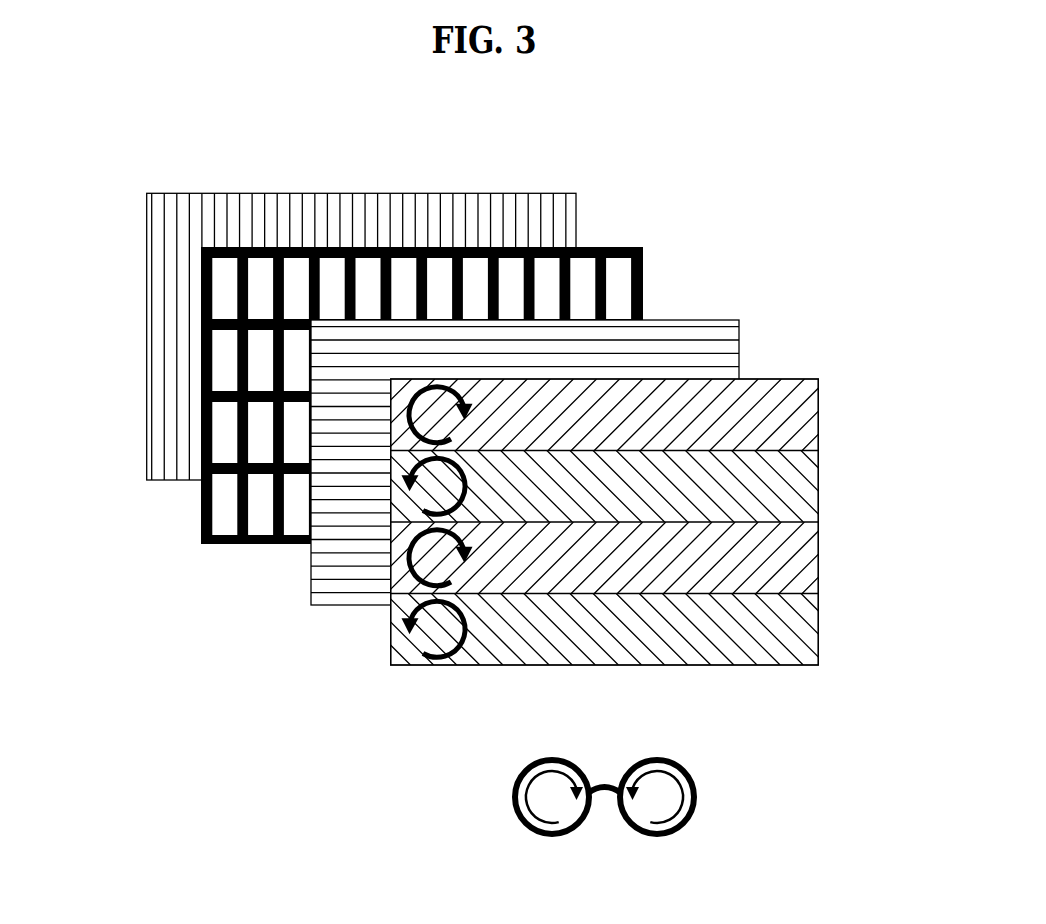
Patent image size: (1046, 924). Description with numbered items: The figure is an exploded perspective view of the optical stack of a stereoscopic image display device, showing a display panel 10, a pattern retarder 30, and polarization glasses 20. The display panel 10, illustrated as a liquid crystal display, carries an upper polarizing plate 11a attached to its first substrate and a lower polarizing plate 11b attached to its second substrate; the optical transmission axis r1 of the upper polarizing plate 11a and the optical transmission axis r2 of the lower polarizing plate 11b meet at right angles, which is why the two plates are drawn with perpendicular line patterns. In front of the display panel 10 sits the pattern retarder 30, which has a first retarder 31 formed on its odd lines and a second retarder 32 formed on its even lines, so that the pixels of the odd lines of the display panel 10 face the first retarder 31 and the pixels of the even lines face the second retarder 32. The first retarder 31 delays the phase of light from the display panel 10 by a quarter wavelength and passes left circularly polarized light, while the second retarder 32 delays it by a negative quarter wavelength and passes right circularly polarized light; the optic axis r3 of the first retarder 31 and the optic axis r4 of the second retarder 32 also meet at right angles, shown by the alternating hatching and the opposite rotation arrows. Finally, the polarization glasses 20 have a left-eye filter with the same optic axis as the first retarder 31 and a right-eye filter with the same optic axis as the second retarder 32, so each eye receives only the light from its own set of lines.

The display panel 10 is at (623, 246).
The upper polarizing plate 11a is at (532, 468).
The lower polarizing plate 11b is at (340, 301).
The pattern retarder 30 is at (620, 532).
The first retarder 31 is at (808, 410).
The second retarder 32 is at (620, 602).
The polarization glasses 20 is at (698, 795).
The optical transmission axis of the upper polarizing plate r1 is at (327, 586).
The optical transmission axis of the lower polarizing plate r2 is at (165, 433).
The optic axis of the first retarder r3 is at (402, 581).
The optic axis of the second retarder r4 is at (485, 653).